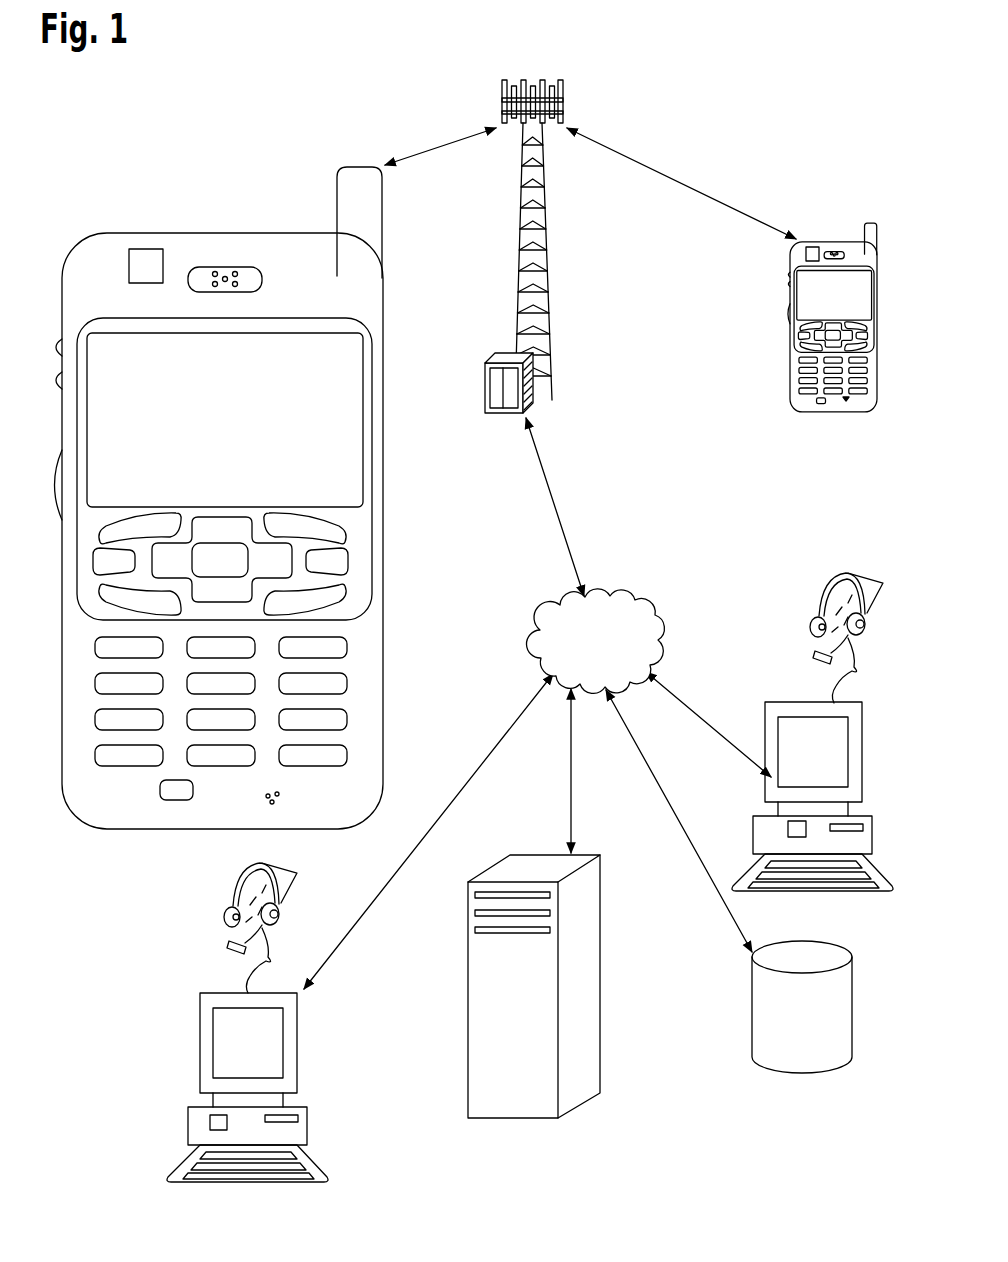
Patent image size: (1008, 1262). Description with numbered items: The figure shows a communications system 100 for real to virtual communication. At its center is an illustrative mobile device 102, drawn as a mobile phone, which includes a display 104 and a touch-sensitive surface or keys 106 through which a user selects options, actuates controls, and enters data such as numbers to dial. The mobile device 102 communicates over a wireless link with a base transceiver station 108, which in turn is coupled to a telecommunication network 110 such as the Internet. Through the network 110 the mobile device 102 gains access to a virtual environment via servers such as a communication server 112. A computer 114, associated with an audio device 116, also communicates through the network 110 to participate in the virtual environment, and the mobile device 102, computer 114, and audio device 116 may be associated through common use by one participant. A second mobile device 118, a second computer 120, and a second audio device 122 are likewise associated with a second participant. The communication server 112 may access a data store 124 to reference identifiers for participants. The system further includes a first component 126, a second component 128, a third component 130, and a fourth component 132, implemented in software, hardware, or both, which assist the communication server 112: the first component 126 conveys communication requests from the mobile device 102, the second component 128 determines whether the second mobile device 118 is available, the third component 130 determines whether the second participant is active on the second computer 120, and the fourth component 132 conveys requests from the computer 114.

The communications system 100 is at (232, 57).
The mobile device 102 is at (257, 527).
The display 104 is at (356, 380).
The keys 106 is at (400, 508).
The base transceiver station 108 is at (485, 412).
The telecommunication network 110 is at (617, 597).
The communication server 112 is at (603, 1088).
The computer 114 is at (246, 1087).
The audio device 116 is at (221, 919).
The second mobile device 118 is at (832, 324).
The second computer 120 is at (796, 814).
The second audio device 122 is at (871, 569).
The data store 124 is at (819, 1069).
The first component 126 is at (138, 250).
The second component 128 is at (811, 247).
The third component 130 is at (788, 829).
The fourth component 132 is at (210, 1123).